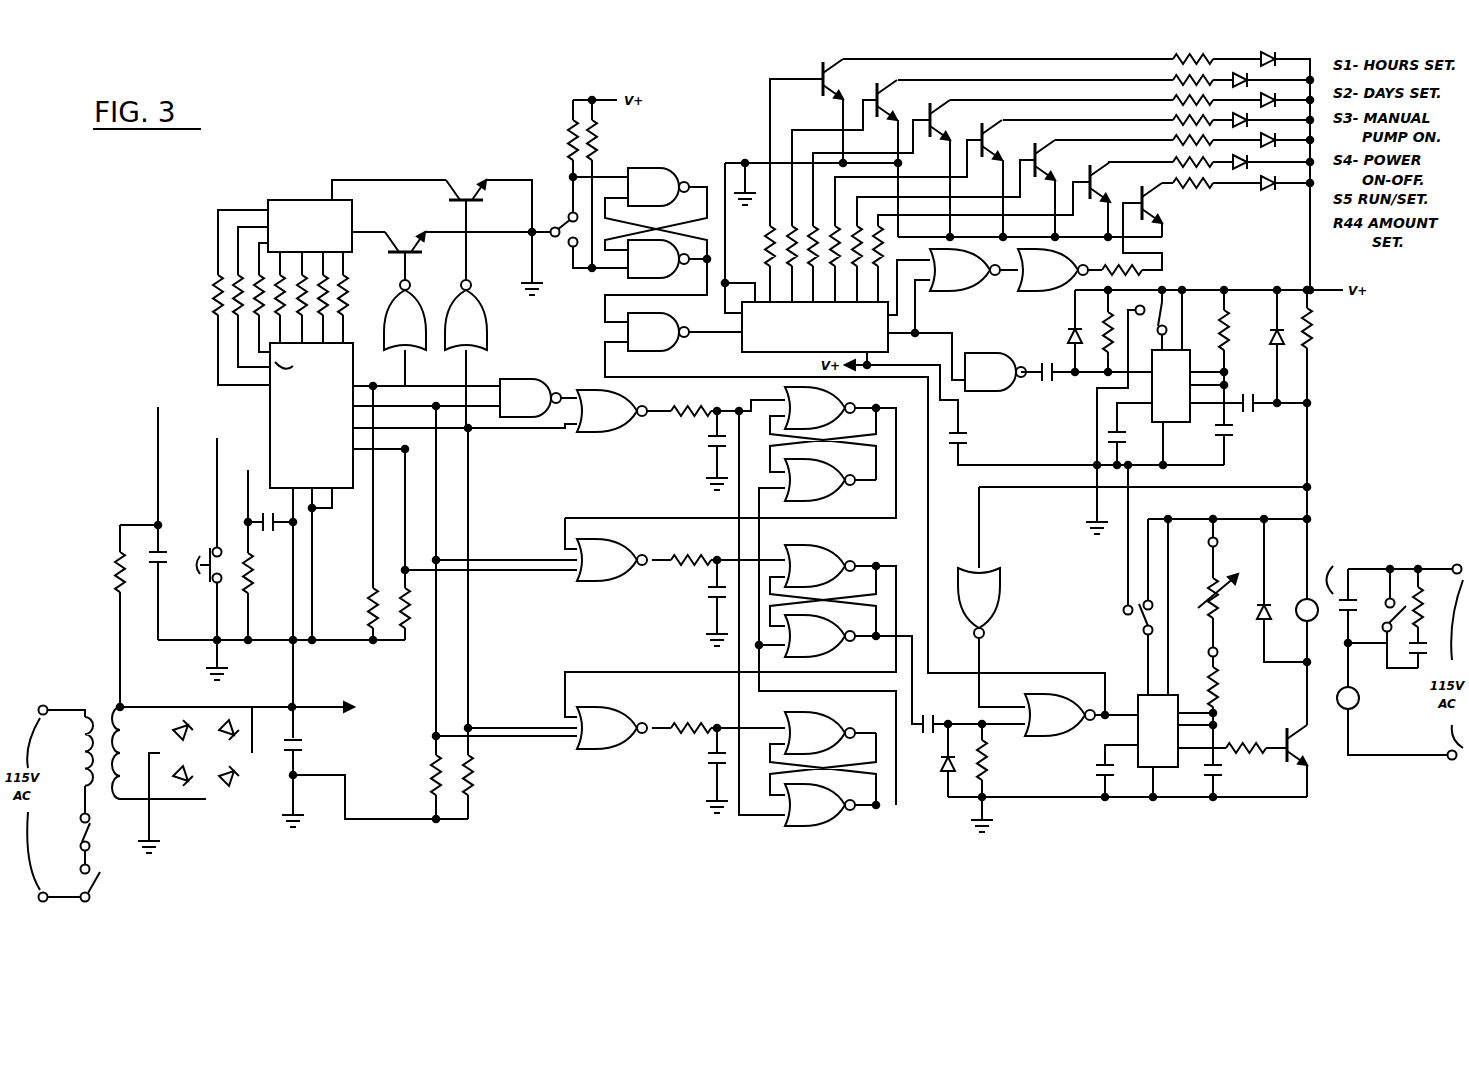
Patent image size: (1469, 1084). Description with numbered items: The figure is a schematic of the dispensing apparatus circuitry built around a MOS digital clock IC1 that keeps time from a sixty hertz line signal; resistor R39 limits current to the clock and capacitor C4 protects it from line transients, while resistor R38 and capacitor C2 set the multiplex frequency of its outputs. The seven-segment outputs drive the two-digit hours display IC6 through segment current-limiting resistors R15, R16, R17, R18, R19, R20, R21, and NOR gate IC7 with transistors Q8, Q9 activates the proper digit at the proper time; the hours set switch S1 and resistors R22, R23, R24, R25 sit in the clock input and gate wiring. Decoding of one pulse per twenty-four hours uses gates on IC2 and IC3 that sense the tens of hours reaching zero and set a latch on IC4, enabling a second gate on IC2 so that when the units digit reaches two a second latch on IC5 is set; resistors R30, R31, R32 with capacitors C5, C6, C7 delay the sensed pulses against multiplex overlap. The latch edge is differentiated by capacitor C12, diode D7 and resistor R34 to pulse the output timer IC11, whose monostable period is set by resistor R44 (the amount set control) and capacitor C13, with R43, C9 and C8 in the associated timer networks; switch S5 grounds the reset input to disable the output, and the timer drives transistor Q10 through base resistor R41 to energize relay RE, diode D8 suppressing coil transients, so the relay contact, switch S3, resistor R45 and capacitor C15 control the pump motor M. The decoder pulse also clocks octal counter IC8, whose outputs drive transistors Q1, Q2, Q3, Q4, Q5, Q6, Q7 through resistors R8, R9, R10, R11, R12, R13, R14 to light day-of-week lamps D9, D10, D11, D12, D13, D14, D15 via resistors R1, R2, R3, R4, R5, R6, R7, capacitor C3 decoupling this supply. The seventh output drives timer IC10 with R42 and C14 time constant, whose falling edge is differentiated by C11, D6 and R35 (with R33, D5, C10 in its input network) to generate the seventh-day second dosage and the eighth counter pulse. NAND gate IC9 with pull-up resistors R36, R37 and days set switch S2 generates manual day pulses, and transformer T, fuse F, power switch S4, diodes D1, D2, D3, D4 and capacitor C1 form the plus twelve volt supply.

The MOS digital clock IC1 is at (311, 415).
The triple three-input NOR gate IC2 is at (618, 569).
The quad two-input NAND gate IC3 is at (533, 397).
The quad two-input NOR gate IC4 is at (825, 606).
The quad two-input NOR gate IC5 is at (944, 640).
The seven-segment display IC6 is at (310, 226).
The quad two-input NOR gate IC7 is at (738, 299).
The octal decoded output counter IC8 is at (815, 327).
The quad two-input NAND gate IC9 is at (828, 279).
The timer IC10 is at (1171, 386).
The timer IC11 is at (1158, 731).
The resistor R1 is at (1181, 53).
The resistor R2 is at (1181, 74).
The resistor R3 is at (1181, 94).
The resistor R4 is at (1181, 114).
The resistor R5 is at (1181, 134).
The resistor R6 is at (1181, 156).
The resistor R7 is at (1182, 177).
The resistor R8 is at (762, 259).
The resistor R9 is at (784, 259).
The resistor R10 is at (805, 261).
The resistor R11 is at (827, 261).
The resistor R12 is at (849, 261).
The resistor R13 is at (870, 261).
The resistor R14 is at (1118, 261).
The resistor R15 is at (211, 306).
The resistor R16 is at (231, 306).
The resistor R17 is at (252, 306).
The resistor R18 is at (273, 306).
The resistor R19 is at (295, 306).
The resistor R20 is at (316, 306).
The resistor R21 is at (336, 306).
The resistor R22 is at (358, 608).
The resistor R23 is at (392, 599).
The resistor R24 is at (422, 775).
The resistor R25 is at (483, 775).
The resistor R30 is at (691, 402).
The resistor R31 is at (691, 551).
The resistor R32 is at (691, 719).
The resistor R33 is at (1121, 332).
The resistor R34 is at (997, 760).
The resistor R35 is at (1322, 328).
The pull-up resistor R36 is at (557, 140).
The pull-up resistor R37 is at (607, 140).
The resistor R38 is at (263, 573).
The resistor R39 is at (104, 572).
The resistor R41 is at (1246, 740).
The resistor R42 is at (1237, 330).
The resistor R43 is at (1228, 687).
The resistor R44 is at (1194, 597).
The resistor R45 is at (1433, 607).
The capacitor C1 is at (303, 746).
The capacitor C2 is at (264, 514).
The capacitor C3 is at (967, 440).
The capacitor C4 is at (166, 549).
The capacitor C5 is at (707, 442).
The capacitor C6 is at (707, 594).
The capacitor C7 is at (707, 760).
The capacitor C8 is at (1126, 439).
The capacitor C9 is at (1096, 770).
The capacitor C10 is at (1047, 380).
The capacitor C11 is at (1250, 396).
The capacitor C12 is at (934, 714).
The capacitor C13 is at (1226, 773).
The capacitor C14 is at (1237, 434).
The capacitor C15 is at (1431, 649).
The diode D1 is at (200, 740).
The diode D2 is at (229, 730).
The diode D3 is at (183, 776).
The diode D4 is at (229, 776).
The diode D5 is at (1063, 333).
The diode D6 is at (1268, 344).
The diode D7 is at (937, 766).
The diode D8 is at (1254, 619).
The light emitting diode lamp D9 is at (1259, 53).
The light emitting diode lamp D10 is at (1230, 74).
The light emitting diode lamp D11 is at (1282, 95).
The light emitting diode lamp D12 is at (1230, 114).
The light emitting diode lamp D13 is at (1282, 135).
The light emitting diode lamp D14 is at (1230, 156).
The light emitting diode lamp D15 is at (1282, 178).
The transistor Q1 is at (835, 79).
The transistor Q2 is at (889, 100).
The transistor Q3 is at (942, 120).
The transistor Q4 is at (994, 140).
The transistor Q5 is at (1047, 160).
The transistor Q6 is at (1102, 182).
The transistor Q7 is at (1155, 203).
The transistor Q8 is at (405, 234).
The transistor Q9 is at (466, 183).
The transistor Q10 is at (1311, 745).
The momentary contact switch S1 is at (207, 576).
The momentary contact switch S2 is at (560, 236).
The momentary action switch S3 is at (1378, 615).
The miniature toggle switch S4 is at (99, 883).
The miniature toggle switch S5 is at (1134, 472).
The transformer T is at (102, 742).
The fuse F is at (93, 832).
The relay RE is at (1333, 585).
The motor M is at (1356, 698).